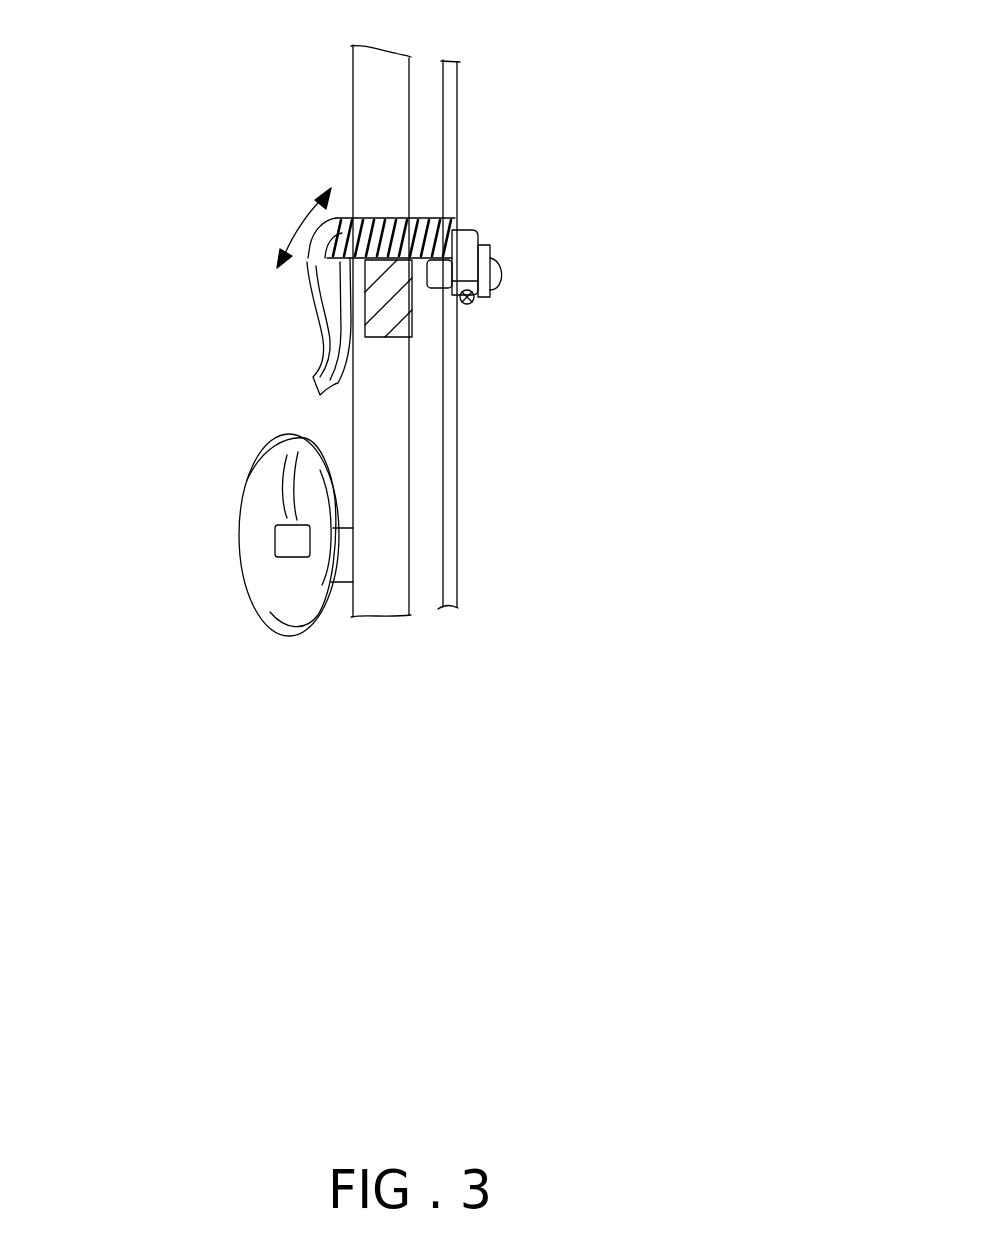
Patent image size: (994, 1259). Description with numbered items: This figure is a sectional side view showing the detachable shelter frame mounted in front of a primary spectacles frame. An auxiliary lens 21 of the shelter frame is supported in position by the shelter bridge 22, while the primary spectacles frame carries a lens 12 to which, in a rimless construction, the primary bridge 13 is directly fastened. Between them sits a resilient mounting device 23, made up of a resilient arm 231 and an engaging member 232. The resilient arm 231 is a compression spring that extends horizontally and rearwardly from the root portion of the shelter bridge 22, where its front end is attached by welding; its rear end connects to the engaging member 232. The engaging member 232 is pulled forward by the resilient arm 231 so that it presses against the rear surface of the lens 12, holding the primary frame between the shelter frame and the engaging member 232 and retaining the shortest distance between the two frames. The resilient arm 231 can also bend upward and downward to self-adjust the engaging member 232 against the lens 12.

The lens 12 is at (374, 129).
The primary bridge 13 is at (393, 318).
The auxiliary lens 21 is at (447, 522).
The shelter bridge 22 is at (467, 271).
The resilient mounting device 23 is at (441, 210).
The resilient arm 231 is at (453, 223).
The engaging member 232 is at (322, 322).